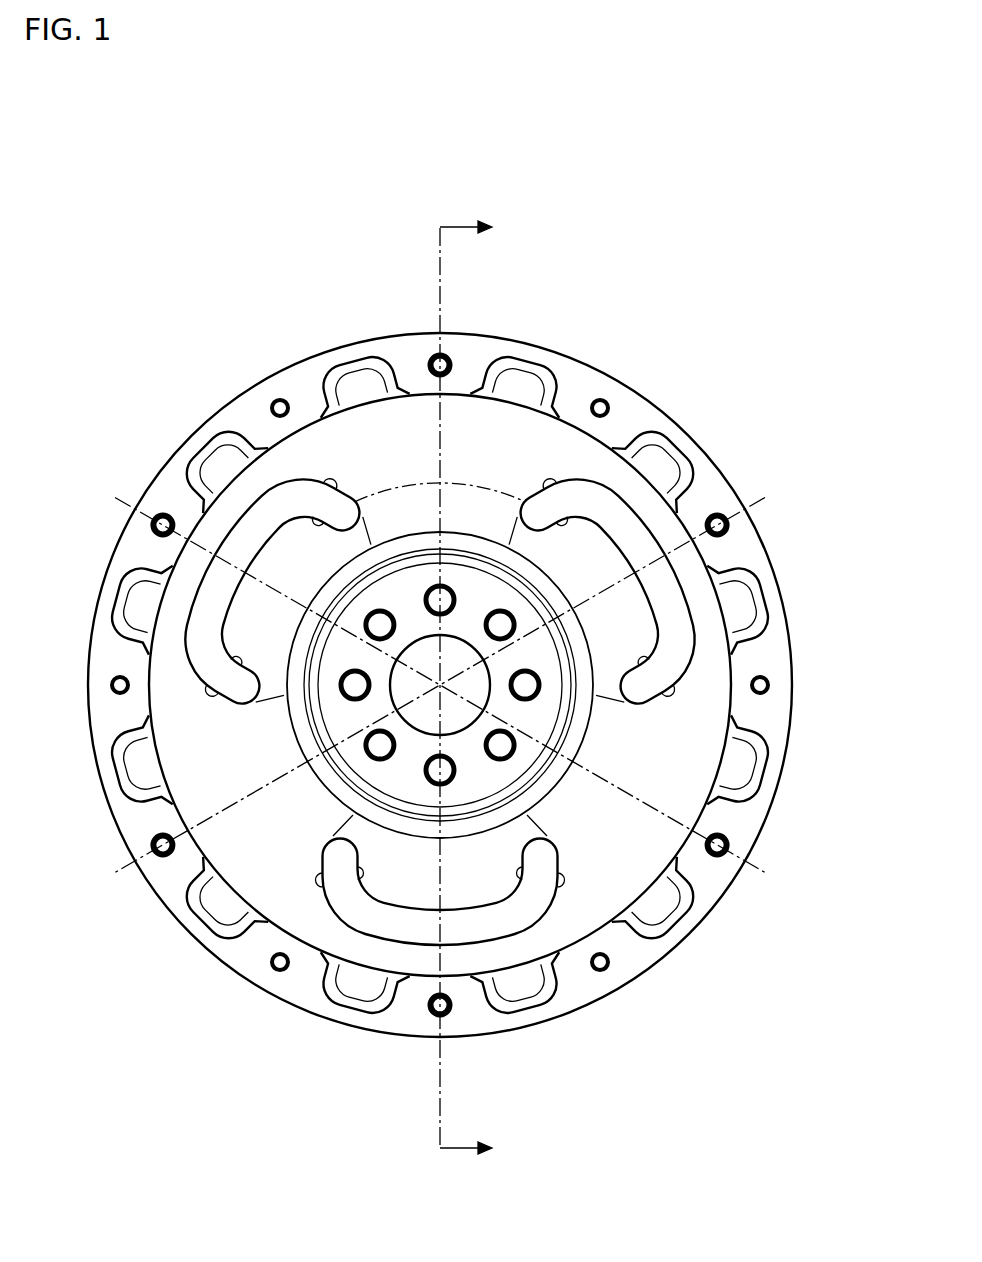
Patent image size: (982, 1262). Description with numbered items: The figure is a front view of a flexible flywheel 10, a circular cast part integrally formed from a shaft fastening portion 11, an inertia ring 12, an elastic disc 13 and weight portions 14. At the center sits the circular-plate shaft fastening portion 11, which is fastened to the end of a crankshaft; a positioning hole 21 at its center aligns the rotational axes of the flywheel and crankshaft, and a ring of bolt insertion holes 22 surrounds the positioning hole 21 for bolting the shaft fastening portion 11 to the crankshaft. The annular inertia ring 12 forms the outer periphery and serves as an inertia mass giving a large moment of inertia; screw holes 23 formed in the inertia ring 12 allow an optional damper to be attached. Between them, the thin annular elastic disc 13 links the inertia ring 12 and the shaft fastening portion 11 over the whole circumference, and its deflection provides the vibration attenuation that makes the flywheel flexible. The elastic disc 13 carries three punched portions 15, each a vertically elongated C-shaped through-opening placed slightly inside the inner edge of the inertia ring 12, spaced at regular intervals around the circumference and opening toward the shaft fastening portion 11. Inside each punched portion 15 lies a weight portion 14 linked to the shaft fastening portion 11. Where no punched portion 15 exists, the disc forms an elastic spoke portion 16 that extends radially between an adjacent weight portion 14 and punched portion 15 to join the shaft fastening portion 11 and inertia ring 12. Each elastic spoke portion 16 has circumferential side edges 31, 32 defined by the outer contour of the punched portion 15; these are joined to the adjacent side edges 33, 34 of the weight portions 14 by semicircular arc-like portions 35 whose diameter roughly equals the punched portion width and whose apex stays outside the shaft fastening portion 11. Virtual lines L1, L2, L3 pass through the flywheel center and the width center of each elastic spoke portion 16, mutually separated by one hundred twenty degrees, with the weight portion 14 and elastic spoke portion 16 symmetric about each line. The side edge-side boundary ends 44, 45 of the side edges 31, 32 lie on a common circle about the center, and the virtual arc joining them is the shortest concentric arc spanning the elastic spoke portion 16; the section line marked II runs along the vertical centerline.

The flexible flywheel 10 is at (738, 300).
The shaft fastening portion 11 is at (585, 748).
The inertia ring 12 is at (794, 732).
The elastic disc 13 is at (287, 462).
The weight portion 14 is at (160, 514).
The punched portion 15 is at (192, 664).
The elastic spoke portion 16 is at (490, 436).
The positioning hole 21 is at (425, 730).
The bolt insertion hole 22 is at (384, 626).
The screw hole 23 is at (608, 402).
The side edge 31 is at (340, 492).
The side edge 32 is at (560, 492).
The side edge of weight portion 33 is at (314, 528).
The side edge of weight portion 34 is at (235, 660).
The arc-like portion 35 is at (337, 530).
The side edge-side boundary end 44 is at (364, 486).
The side edge-side boundary end 45 is at (530, 500).
The first virtual line L1 is at (437, 320).
The second virtual line L2 is at (752, 878).
The third virtual line L3 is at (138, 878).
The section line II is at (466, 690).